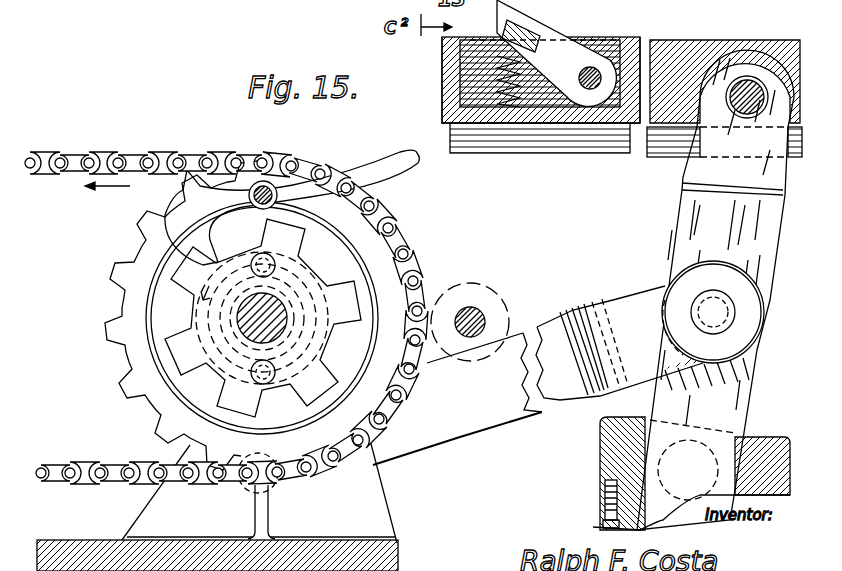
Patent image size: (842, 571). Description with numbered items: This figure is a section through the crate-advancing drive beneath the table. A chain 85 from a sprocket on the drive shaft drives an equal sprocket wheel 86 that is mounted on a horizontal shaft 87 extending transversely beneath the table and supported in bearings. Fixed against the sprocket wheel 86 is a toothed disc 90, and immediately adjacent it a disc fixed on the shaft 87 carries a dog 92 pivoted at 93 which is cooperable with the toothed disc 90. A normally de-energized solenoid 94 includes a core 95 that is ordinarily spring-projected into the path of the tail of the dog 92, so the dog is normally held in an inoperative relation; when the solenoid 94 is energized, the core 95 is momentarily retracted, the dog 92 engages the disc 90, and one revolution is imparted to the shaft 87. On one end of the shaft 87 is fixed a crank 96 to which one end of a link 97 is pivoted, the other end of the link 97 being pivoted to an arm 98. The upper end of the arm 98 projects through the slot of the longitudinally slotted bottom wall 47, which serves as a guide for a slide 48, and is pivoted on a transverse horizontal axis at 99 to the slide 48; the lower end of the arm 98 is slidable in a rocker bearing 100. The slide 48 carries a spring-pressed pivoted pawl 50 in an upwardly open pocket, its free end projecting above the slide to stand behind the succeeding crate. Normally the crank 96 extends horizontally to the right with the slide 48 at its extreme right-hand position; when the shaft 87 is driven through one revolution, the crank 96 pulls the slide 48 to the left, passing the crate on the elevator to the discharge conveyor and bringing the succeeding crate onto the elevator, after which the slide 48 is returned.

The bottom wall 47 is at (530, 150).
The slide 48 is at (648, 52).
The pawl 50 is at (553, 34).
The chain 85 is at (142, 133).
The sprocket wheel 86 is at (128, 302).
The shaft 87 is at (243, 320).
The toothed disc 90 is at (187, 360).
The dog 92 is at (185, 250).
The pivot 93 is at (300, 217).
The solenoid 94 is at (492, 296).
The core 95 is at (480, 320).
The crank 96 is at (166, 422).
The link 97 is at (572, 388).
The arm 98 is at (687, 193).
The pivot axis 99 is at (752, 82).
The rocker bearing 100 is at (620, 458).